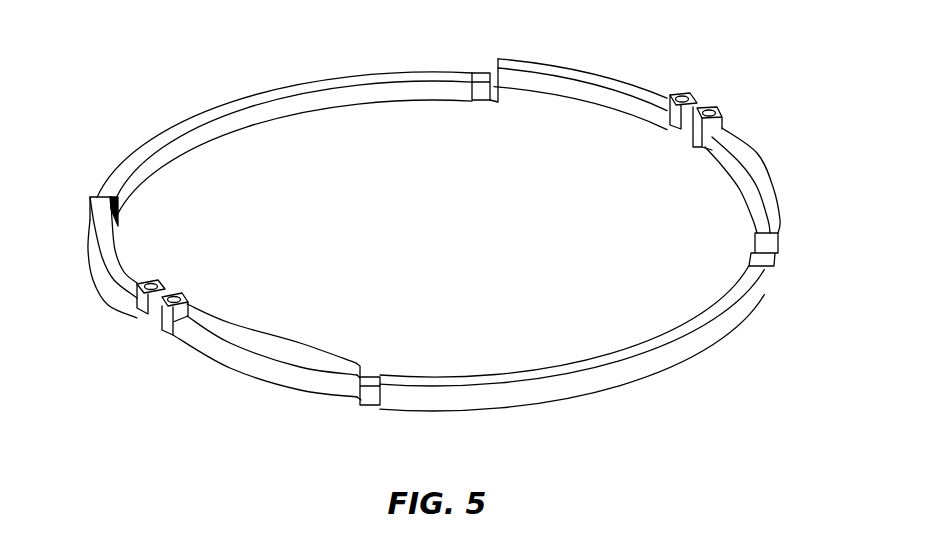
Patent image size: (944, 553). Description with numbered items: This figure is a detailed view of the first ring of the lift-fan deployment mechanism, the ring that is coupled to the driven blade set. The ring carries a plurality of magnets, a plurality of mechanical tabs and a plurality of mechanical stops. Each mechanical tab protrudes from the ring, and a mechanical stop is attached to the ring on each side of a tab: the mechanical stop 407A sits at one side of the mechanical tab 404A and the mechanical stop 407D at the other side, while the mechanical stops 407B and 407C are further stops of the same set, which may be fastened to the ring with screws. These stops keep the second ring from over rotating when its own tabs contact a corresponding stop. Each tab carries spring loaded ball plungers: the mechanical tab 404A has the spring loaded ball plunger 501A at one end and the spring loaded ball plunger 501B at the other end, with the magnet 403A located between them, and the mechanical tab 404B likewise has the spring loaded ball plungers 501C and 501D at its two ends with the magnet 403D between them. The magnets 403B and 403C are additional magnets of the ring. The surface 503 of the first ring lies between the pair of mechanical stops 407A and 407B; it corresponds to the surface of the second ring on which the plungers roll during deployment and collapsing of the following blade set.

The surface 503 is at (433, 233).
The mechanical stop 407A is at (218, 350).
The mechanical stop 407B is at (755, 162).
The mechanical stop 407C is at (530, 62).
The mechanical stop 407D is at (92, 196).
The magnet 403A is at (159, 316).
The magnet 403B is at (372, 402).
The magnet 403C is at (774, 266).
The magnet 403D is at (485, 100).
The mechanical tab 404A is at (168, 333).
The mechanical tab 404B is at (697, 150).
The spring loaded ball plunger 501A is at (152, 282).
The spring loaded ball plunger 501B is at (184, 296).
The spring loaded ball plunger 501C is at (680, 92).
The spring loaded ball plunger 501D is at (710, 108).